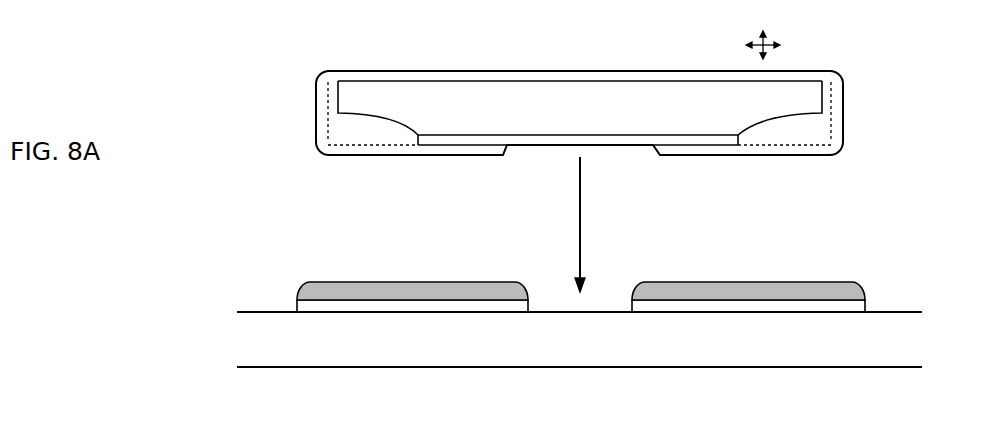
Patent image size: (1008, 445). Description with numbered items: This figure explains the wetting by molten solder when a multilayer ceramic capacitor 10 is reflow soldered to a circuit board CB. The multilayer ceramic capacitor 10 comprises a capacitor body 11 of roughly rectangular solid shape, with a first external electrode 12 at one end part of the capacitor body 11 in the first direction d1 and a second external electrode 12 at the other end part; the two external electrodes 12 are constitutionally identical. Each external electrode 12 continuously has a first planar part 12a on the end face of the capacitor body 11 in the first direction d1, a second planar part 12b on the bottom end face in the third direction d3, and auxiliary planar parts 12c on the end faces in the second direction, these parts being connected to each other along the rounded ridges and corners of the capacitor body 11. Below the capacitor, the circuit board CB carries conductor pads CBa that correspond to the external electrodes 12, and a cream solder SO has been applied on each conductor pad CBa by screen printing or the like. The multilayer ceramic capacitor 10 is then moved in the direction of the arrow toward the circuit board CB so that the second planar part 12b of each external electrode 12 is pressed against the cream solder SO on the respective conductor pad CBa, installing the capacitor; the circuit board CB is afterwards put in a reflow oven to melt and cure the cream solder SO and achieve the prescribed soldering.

The multilayer ceramic capacitor 10 is at (376, 64).
The capacitor body 11 is at (580, 70).
The external electrode 12 is at (316, 110).
The first planar part 12a is at (316, 94).
The second planar part 12b is at (450, 157).
The auxiliary planar part 12c is at (370, 134).
The first direction d1 is at (773, 46).
The third direction d3 is at (762, 35).
The circuit board CB is at (577, 367).
The conductor pad CBa is at (410, 312).
The cream solder SO is at (381, 282).